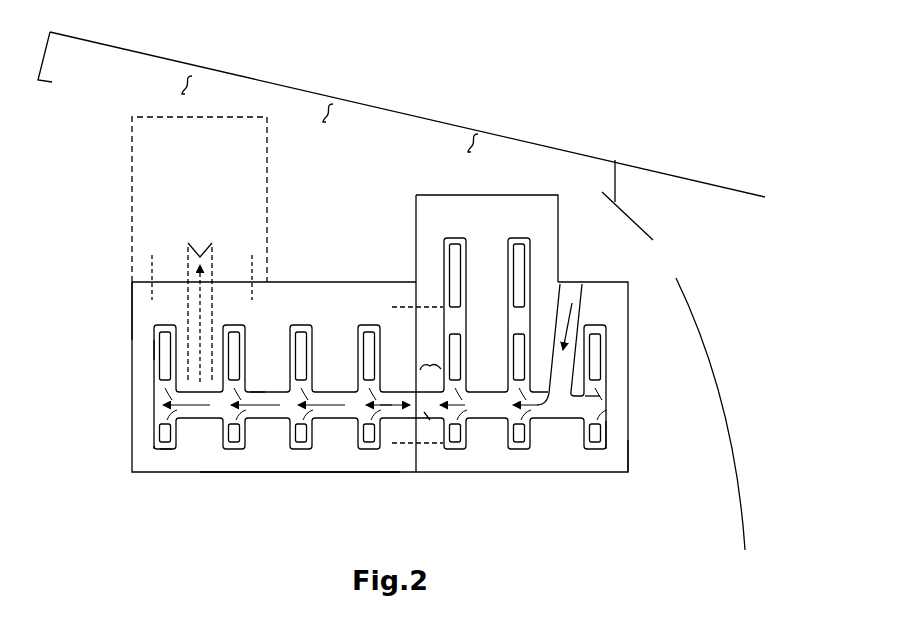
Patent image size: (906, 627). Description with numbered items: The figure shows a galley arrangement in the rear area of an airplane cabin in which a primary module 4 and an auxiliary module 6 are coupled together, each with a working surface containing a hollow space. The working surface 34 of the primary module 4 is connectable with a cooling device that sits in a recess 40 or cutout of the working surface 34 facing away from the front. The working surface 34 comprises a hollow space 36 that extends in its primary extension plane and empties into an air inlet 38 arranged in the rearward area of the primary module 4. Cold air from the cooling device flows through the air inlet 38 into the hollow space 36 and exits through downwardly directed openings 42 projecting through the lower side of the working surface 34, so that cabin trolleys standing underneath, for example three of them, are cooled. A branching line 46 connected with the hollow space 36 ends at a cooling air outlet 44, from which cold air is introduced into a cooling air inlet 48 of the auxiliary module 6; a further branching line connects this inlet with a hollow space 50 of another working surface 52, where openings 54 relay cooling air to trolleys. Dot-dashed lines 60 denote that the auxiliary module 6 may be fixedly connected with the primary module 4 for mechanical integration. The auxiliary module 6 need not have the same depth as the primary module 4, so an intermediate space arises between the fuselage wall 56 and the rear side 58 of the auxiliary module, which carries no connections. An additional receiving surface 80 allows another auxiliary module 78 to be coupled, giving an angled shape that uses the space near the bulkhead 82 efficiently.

The primary module 4 is at (578, 463).
The auxiliary module 6 is at (143, 310).
The working surface 34 is at (620, 453).
The hollow space 36 is at (593, 405).
The air inlet 38 is at (563, 275).
The recess 40 is at (617, 230).
The openings 42 is at (605, 367).
The cooling air outlet 44 is at (425, 413).
The branching line 46 is at (430, 354).
The cooling air inlet 48 is at (403, 405).
The hollow space 50 is at (257, 392).
The working surface 52 is at (173, 458).
The openings 54 is at (153, 350).
The fuselage wall 56 is at (533, 137).
The rear side 58 is at (282, 493).
The dot-dashed lines 60 is at (434, 302).
The auxiliary module 78 is at (126, 193).
The receiving surface 80 is at (243, 272).
The bulkhead 82 is at (722, 396).